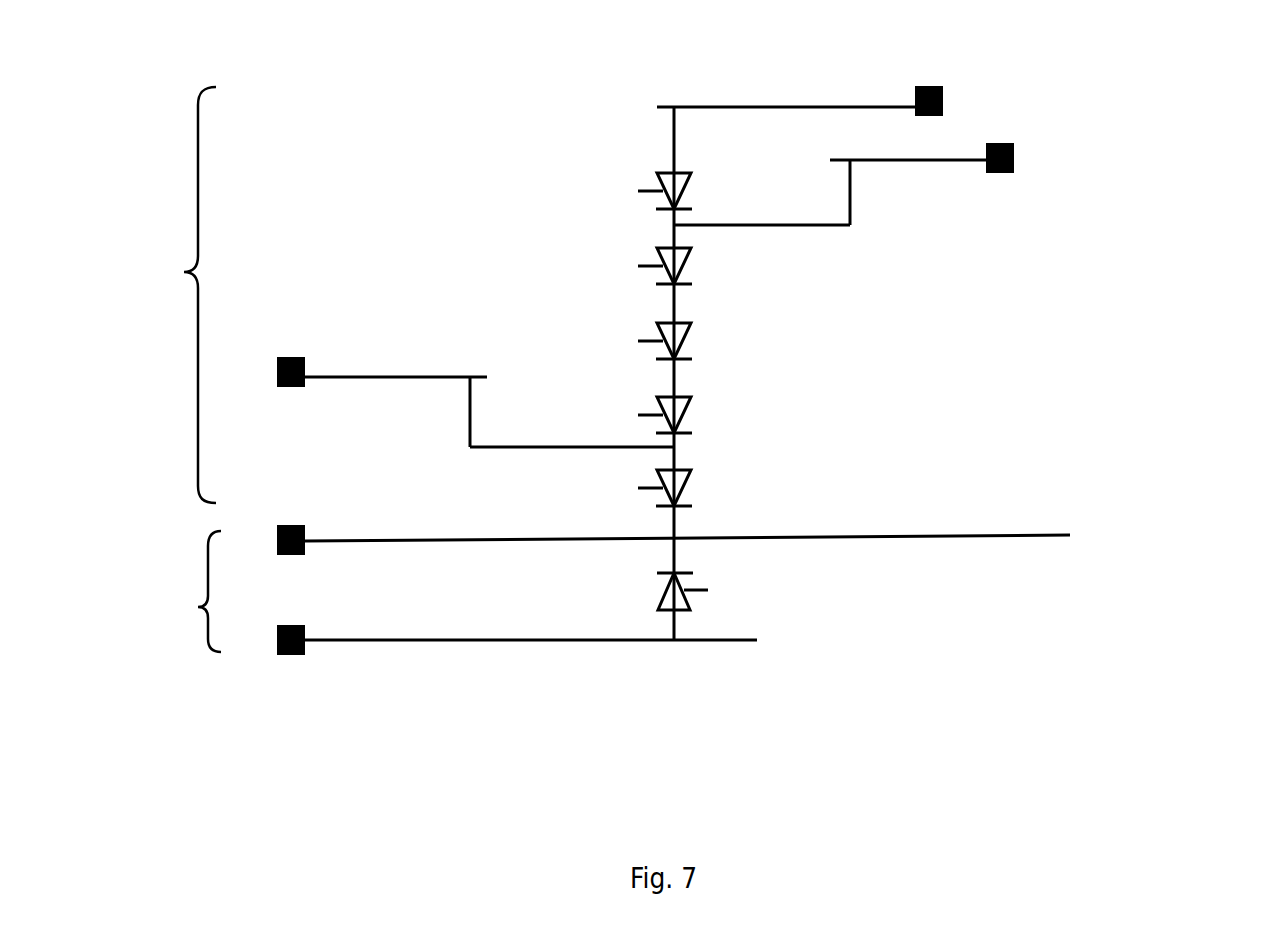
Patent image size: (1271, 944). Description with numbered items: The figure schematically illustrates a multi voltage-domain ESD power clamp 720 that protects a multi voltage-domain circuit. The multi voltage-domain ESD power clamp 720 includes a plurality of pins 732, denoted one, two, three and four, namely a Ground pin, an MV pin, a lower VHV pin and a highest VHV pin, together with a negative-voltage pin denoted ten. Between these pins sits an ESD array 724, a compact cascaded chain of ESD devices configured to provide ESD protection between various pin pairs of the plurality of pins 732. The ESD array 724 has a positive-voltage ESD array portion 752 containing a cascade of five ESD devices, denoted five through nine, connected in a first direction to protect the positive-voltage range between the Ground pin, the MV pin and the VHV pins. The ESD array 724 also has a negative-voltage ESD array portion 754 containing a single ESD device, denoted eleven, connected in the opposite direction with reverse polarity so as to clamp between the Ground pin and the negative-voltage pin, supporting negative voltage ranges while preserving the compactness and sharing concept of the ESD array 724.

The multi voltage-domain ESD power clamp 720 is at (203, 808).
The ESD array 724 is at (612, 678).
The plurality of pins 732 is at (887, 80).
The positive-voltage ESD array portion 752 is at (200, 352).
The negative-voltage ESD array portion 754 is at (207, 572).